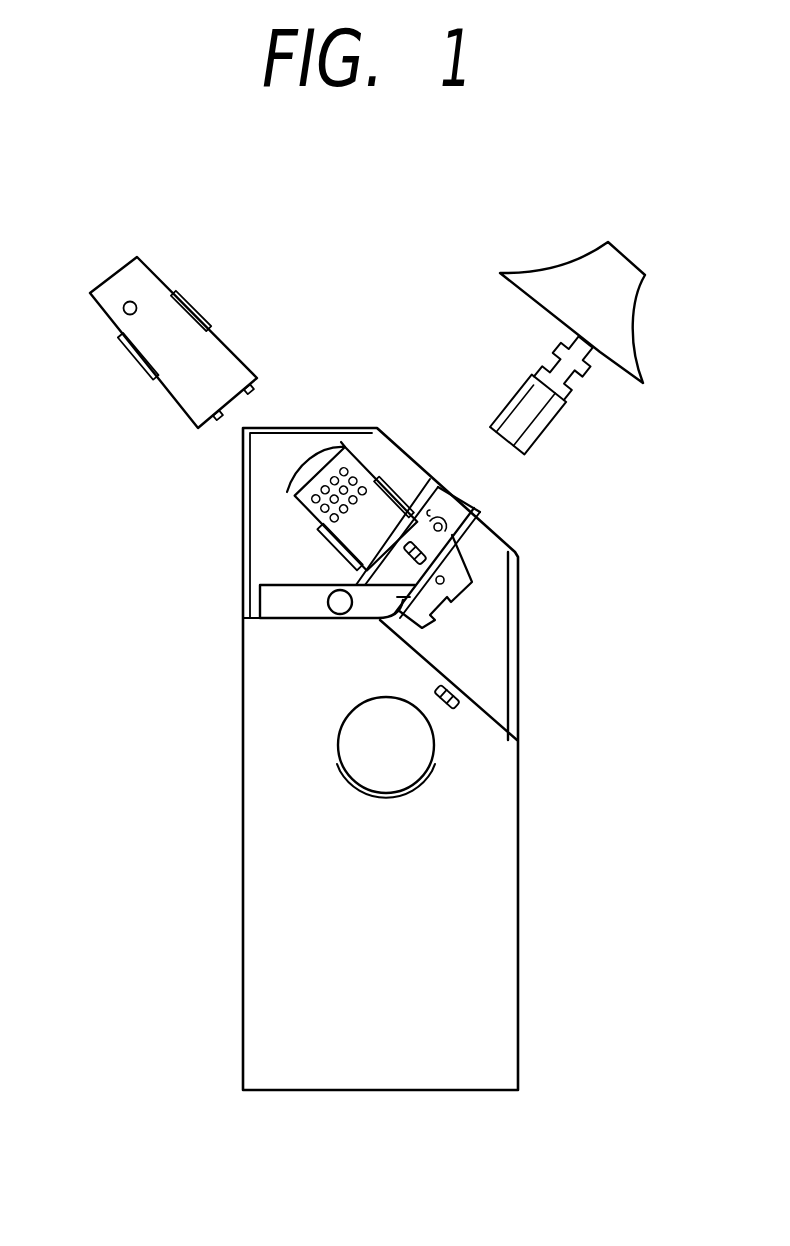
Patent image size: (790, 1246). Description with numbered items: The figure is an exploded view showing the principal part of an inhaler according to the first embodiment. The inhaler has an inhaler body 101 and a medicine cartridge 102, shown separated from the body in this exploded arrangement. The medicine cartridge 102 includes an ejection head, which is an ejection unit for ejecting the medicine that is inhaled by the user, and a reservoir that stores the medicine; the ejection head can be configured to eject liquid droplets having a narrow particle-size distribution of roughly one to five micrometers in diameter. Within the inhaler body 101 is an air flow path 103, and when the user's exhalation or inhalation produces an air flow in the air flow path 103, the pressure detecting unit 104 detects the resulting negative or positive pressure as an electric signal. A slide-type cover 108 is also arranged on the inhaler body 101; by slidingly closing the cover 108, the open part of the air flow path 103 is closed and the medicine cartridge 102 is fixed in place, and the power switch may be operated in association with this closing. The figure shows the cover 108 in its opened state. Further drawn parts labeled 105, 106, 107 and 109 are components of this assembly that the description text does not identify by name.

The inhaler body 101 is at (240, 518).
The medicine cartridge 102 is at (136, 257).
The air flow path 103 is at (440, 607).
The pressure detecting unit 104 is at (447, 537).
The horn antenna 105 is at (622, 256).
The mounting plate 106 is at (248, 604).
The rail 107 is at (462, 508).
The slide-type cover 108 is at (498, 868).
The sensor module 109 is at (346, 472).